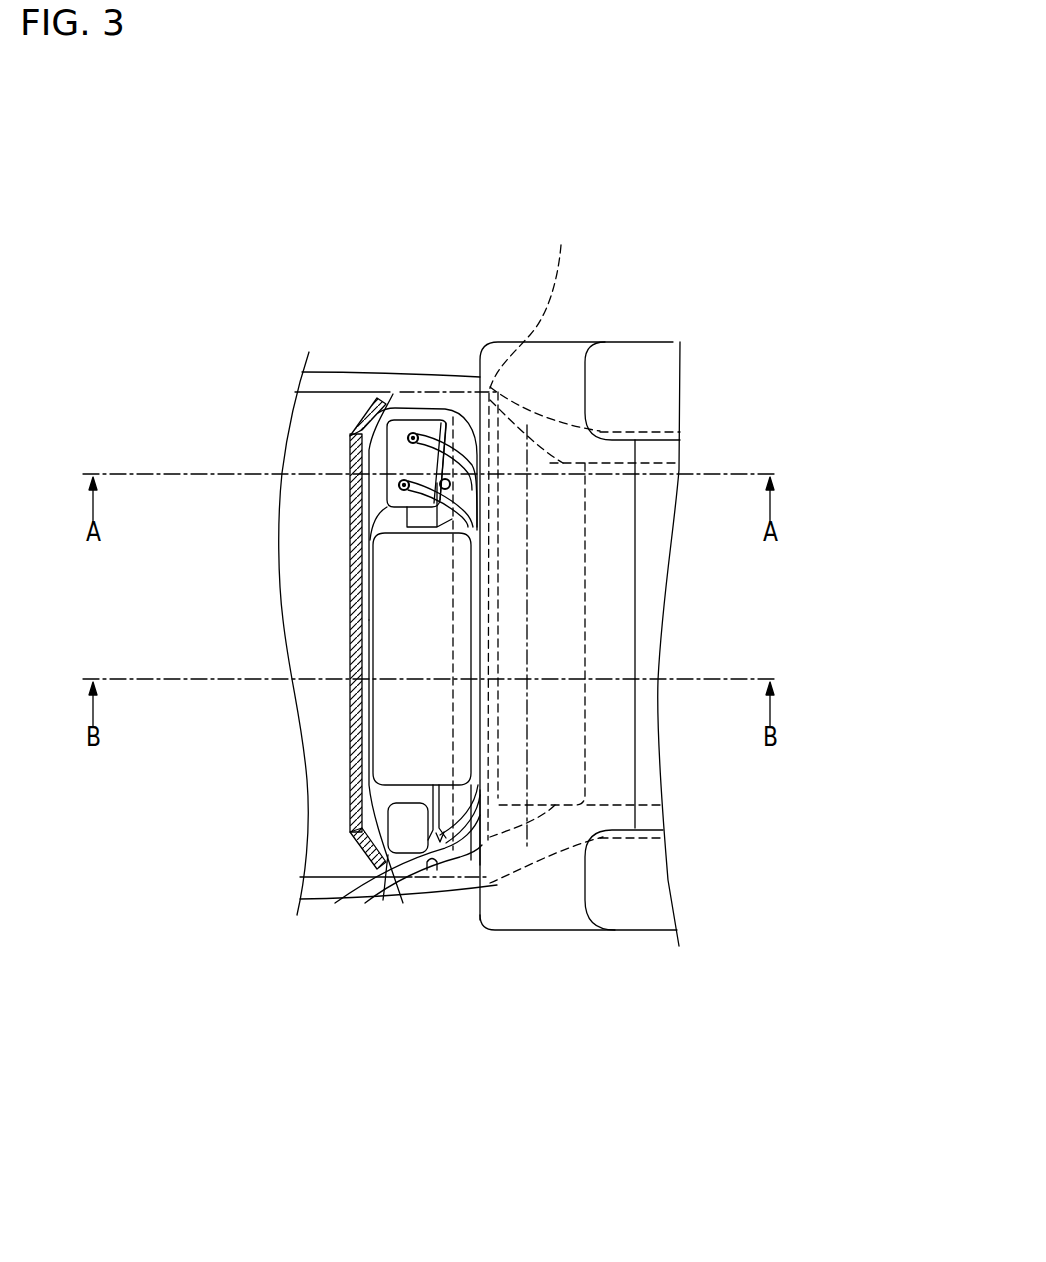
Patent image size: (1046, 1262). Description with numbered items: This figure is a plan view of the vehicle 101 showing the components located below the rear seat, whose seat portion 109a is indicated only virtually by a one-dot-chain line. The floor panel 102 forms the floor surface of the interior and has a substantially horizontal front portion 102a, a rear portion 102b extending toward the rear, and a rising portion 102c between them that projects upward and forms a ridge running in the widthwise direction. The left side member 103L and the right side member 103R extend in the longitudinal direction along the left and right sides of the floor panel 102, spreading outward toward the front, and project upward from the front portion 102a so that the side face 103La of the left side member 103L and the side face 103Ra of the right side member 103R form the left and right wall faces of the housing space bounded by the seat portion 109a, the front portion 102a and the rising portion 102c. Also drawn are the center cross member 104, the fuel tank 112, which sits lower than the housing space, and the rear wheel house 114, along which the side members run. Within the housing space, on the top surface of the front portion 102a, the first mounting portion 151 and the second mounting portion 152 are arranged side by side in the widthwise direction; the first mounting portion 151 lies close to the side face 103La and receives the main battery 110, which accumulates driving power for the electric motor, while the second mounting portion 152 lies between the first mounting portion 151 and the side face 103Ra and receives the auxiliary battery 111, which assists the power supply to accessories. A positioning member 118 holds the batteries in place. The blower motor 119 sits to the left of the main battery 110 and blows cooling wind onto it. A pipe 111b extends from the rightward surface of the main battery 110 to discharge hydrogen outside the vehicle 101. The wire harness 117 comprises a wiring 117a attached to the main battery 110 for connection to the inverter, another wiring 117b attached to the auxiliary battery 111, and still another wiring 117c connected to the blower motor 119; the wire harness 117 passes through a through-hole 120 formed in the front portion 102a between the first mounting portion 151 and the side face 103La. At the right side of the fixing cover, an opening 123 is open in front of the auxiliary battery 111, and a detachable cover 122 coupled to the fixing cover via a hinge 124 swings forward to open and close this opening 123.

The vehicle 101 is at (583, 174).
The floor panel 102 is at (395, 380).
The front portion 102a is at (417, 380).
The rear portion 102b is at (647, 818).
The rising portion 102c is at (567, 348).
The left side member 103L is at (353, 890).
The side face of the left side member 103La is at (398, 850).
The right side member 103R is at (461, 380).
The side face of the right side member 103Ra is at (350, 408).
The center cross member 104 is at (545, 550).
The seat portion 109a is at (348, 703).
The main battery 110 is at (382, 650).
The auxiliary battery 111 is at (396, 485).
The pipe 111b is at (368, 598).
The fuel tank 112 is at (567, 787).
The rear wheel house 114 is at (643, 352).
The wire harness 117 is at (400, 880).
The wiring 117a is at (433, 827).
The wiring 117b is at (447, 865).
The wiring 117c is at (383, 900).
The positioning member 118 is at (400, 380).
The blower motor 119 is at (398, 832).
The through-hole 120 is at (463, 880).
The detachable cover 122 is at (350, 463).
The opening 123 is at (393, 506).
The hinge 124 is at (395, 523).
The first mounting portion 151 is at (382, 760).
The second mounting portion 152 is at (352, 432).